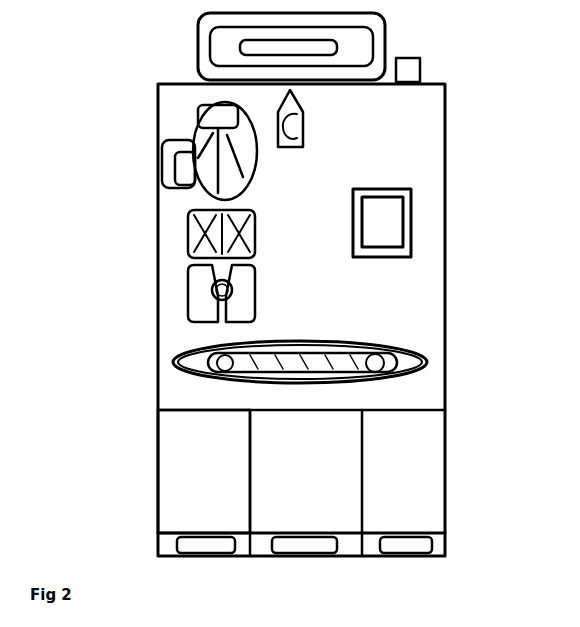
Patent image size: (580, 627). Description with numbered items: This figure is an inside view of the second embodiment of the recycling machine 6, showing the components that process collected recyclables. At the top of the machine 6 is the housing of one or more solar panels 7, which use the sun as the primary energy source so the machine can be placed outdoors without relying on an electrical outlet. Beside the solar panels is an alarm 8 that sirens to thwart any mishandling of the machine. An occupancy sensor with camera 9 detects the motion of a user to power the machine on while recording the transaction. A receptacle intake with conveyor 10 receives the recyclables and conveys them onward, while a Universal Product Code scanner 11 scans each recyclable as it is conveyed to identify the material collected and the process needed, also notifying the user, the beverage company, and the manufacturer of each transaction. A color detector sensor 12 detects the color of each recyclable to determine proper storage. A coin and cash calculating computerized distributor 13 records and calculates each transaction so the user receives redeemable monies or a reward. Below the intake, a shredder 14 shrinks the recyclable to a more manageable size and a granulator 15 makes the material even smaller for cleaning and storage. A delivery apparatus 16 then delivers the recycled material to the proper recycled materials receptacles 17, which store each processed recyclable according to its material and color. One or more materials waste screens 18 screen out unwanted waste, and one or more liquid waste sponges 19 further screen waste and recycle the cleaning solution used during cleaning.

The machine 6 is at (452, 315).
The solar panels 7 is at (192, 44).
The alarm 8 is at (462, 71).
The occupancy sensor with camera 9 is at (315, 126).
The receptacle intake with conveyor 10 is at (188, 127).
The Universal Product Code (UPC) scanner 11 is at (152, 168).
The color detector sensor 12 is at (186, 106).
The coin and cash calculating computerized distributor 13 is at (420, 222).
The shredder 14 is at (182, 233).
The granulator 15 is at (182, 290).
The delivery apparatus 16 is at (490, 365).
The recycled materials receptacles 17 is at (172, 442).
The materials waste screens 18 is at (445, 538).
The liquid waste sponges 19 is at (166, 543).